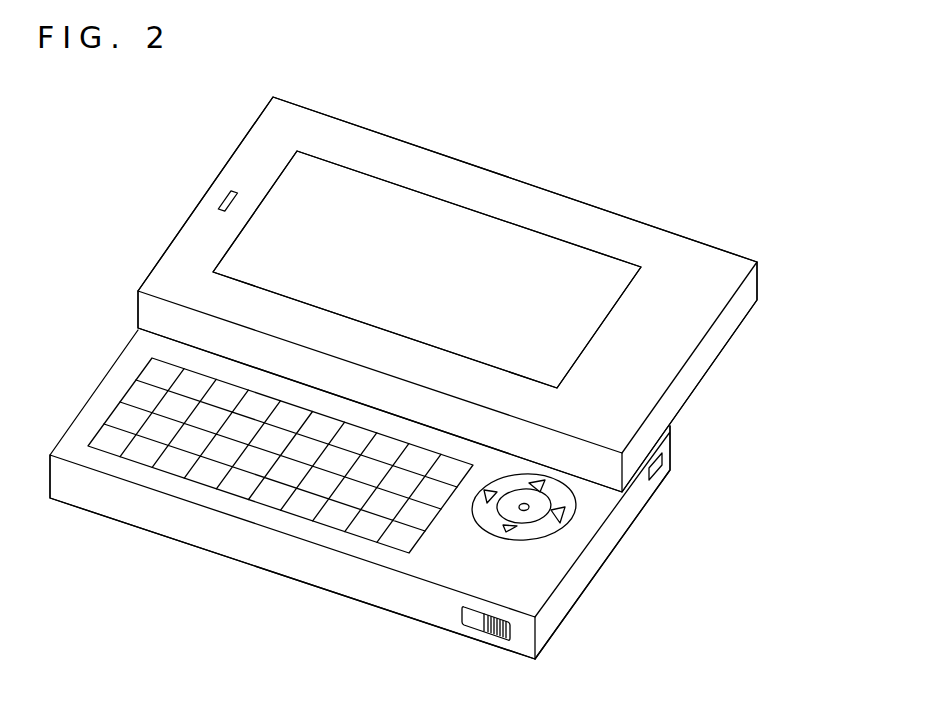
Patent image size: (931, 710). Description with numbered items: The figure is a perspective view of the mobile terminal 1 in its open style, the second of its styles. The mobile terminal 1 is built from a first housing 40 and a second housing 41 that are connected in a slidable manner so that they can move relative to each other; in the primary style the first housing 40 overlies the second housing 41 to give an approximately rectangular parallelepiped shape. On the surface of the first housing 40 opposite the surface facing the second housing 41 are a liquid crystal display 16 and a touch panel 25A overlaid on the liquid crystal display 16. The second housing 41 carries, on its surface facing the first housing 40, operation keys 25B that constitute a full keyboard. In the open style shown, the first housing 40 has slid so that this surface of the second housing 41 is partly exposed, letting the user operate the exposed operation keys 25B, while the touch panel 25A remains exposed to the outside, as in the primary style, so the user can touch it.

The mobile terminal 1 is at (768, 160).
The liquid crystal display 16 is at (340, 212).
The touch panel 25A is at (492, 257).
The operation keys 25B is at (182, 463).
The first housing 40 is at (677, 322).
The second housing 41 is at (370, 585).